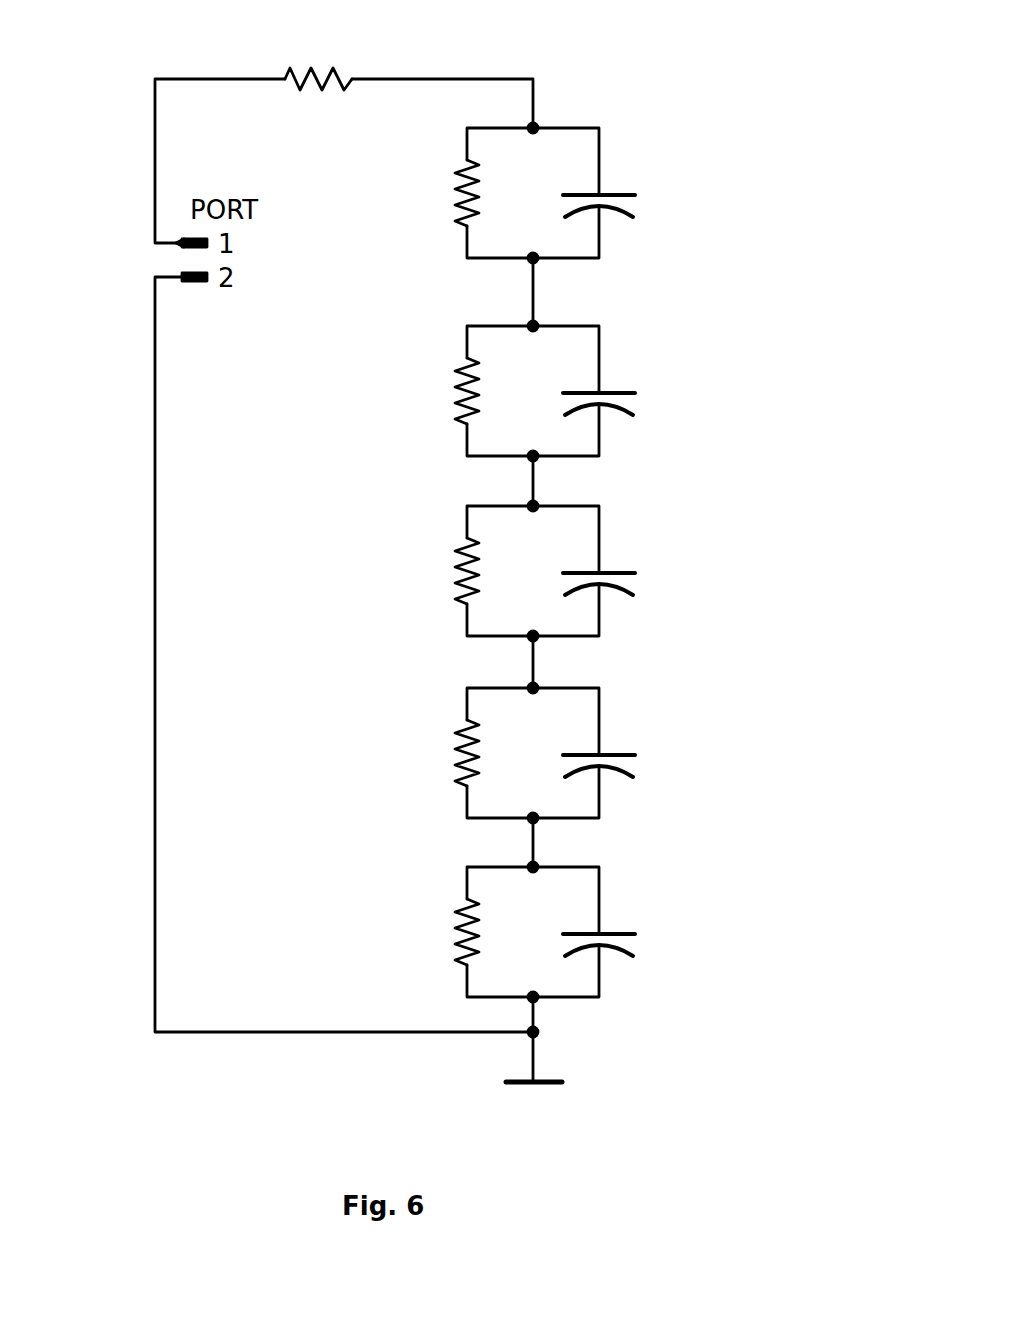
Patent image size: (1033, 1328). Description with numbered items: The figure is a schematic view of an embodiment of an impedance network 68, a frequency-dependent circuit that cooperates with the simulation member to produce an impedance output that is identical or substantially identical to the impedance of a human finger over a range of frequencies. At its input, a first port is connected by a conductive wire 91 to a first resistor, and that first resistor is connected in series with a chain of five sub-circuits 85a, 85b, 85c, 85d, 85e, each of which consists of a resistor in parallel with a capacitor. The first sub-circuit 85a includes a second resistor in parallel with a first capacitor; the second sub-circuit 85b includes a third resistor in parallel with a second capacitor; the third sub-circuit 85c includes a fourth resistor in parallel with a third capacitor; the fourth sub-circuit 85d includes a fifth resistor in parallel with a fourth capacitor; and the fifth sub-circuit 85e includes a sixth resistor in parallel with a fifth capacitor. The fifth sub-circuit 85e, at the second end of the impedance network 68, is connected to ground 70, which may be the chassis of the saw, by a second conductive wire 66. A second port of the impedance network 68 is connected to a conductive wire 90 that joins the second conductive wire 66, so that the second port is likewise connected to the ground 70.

The impedance network 68 is at (587, 517).
The first sub-circuit 85a is at (664, 139).
The second sub-circuit 85b is at (664, 337).
The third sub-circuit 85c is at (664, 517).
The fourth sub-circuit 85d is at (664, 699).
The fifth sub-circuit 85e is at (664, 878).
The conductive wire 91 is at (153, 128).
The conductive wire 90 is at (153, 500).
The second conductive wire 66 is at (536, 1057).
The ground 70 is at (553, 1113).